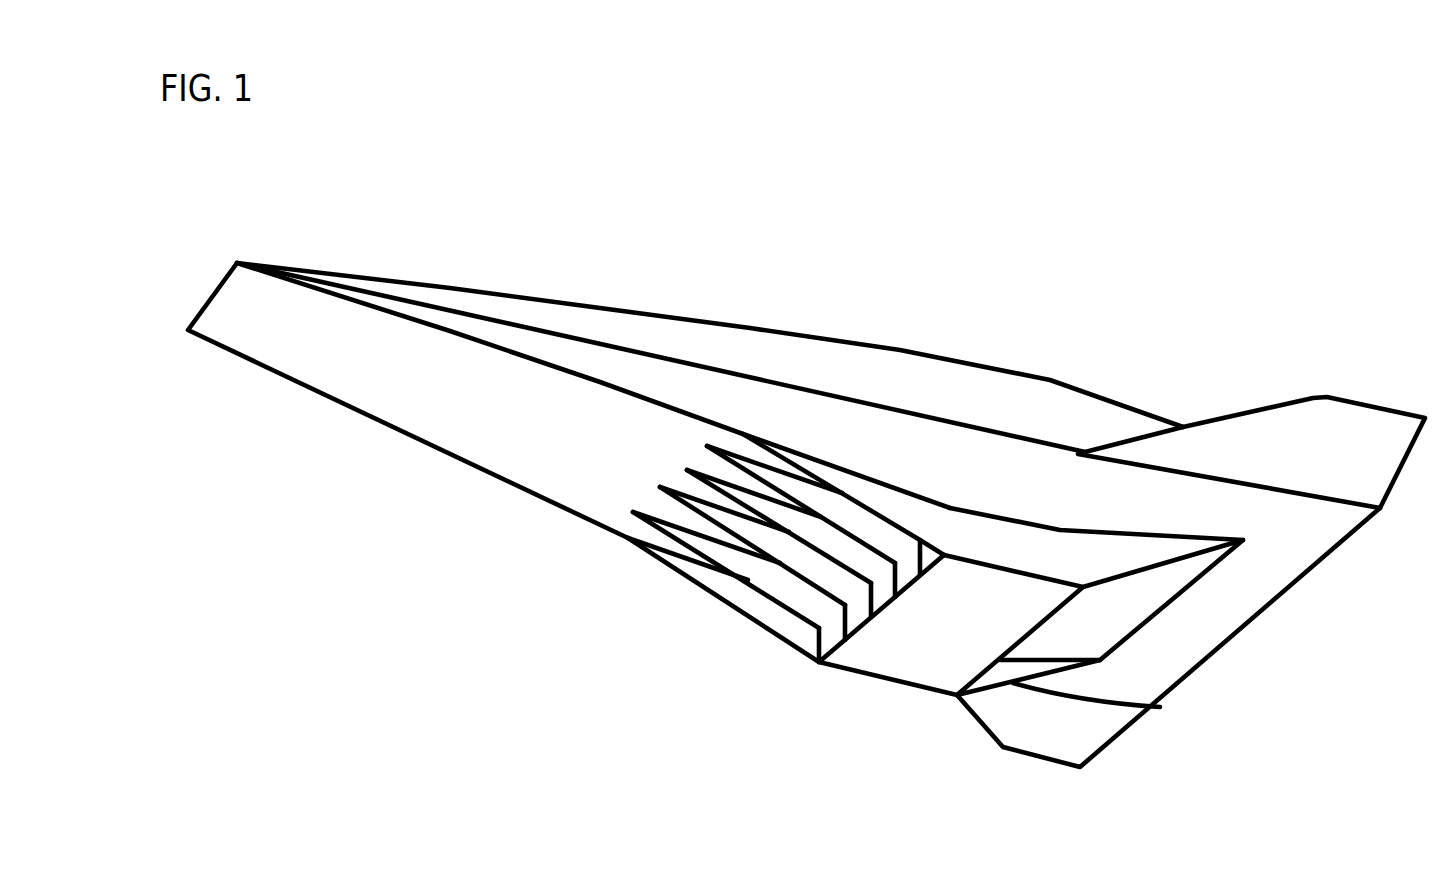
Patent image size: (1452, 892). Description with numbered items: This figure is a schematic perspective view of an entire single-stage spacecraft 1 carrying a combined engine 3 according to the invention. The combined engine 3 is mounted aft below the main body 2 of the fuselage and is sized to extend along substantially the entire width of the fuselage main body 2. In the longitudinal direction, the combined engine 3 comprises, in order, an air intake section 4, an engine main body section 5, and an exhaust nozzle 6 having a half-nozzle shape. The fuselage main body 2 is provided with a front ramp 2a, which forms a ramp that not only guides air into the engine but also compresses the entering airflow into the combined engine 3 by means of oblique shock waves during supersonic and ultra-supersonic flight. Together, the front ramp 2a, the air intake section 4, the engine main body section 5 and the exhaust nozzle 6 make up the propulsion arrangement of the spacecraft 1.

The single-stage spacecraft 1 is at (966, 187).
The fuselage main body 2 is at (690, 333).
The front ramp 2a is at (353, 383).
The combined engine 3 is at (881, 685).
The air intake section 4 is at (765, 622).
The engine main body section 5 is at (942, 662).
The exhaust nozzle 6 is at (1110, 613).